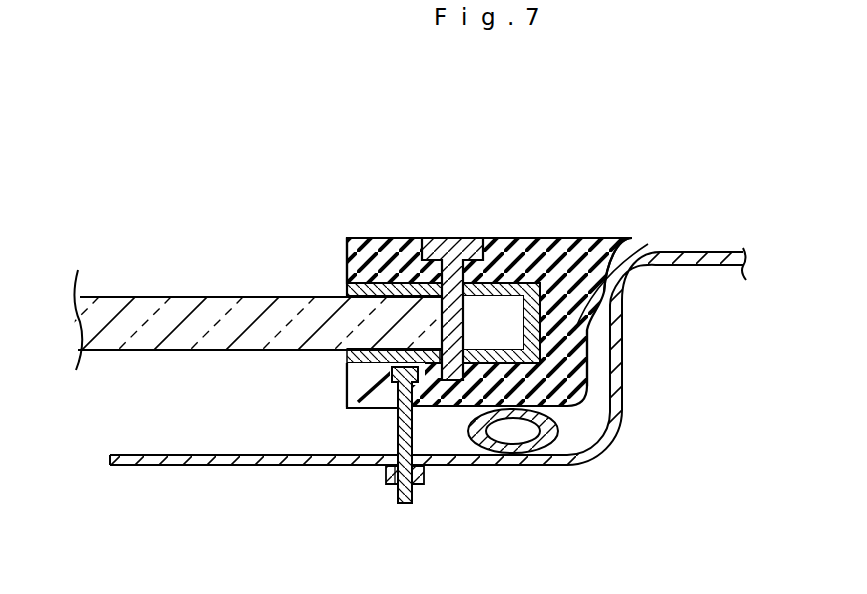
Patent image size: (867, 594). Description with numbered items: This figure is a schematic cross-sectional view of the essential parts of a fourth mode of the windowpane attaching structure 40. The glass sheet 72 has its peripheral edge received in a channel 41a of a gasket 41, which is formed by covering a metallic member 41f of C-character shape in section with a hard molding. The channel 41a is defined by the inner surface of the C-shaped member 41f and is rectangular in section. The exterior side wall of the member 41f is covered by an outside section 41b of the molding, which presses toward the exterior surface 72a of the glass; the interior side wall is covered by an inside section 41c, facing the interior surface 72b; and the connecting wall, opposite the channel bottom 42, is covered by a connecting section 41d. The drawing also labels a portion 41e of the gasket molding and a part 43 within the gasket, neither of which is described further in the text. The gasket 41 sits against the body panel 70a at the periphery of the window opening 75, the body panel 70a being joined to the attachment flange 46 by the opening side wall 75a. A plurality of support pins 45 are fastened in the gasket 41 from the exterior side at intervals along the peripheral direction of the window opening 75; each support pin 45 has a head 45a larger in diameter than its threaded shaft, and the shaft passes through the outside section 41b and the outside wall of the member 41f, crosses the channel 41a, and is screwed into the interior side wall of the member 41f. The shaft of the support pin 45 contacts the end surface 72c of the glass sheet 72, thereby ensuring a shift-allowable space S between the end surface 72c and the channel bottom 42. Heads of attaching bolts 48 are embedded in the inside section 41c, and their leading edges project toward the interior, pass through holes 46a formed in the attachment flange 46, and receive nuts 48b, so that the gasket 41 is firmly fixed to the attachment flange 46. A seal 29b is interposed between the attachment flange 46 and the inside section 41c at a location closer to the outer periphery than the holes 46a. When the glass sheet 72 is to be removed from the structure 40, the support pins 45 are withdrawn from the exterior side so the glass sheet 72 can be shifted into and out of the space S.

The windowpane attaching structure 40 is at (238, 163).
The gasket 41 is at (372, 276).
The channel 41a is at (332, 296).
The outside section 41b is at (385, 237).
The inside section 41c is at (352, 397).
The connecting section 41d is at (592, 333).
The housing shoulder 41e is at (626, 237).
The metallic member 41f is at (360, 237).
The channel bottom 42 is at (538, 268).
The T-bolt 43 is at (440, 237).
The support pin 45 is at (502, 237).
The head 45a is at (457, 237).
The attachment flange 46 is at (262, 468).
The hole 46a is at (410, 488).
The attaching bolt 48 is at (396, 419).
The nut 48b is at (385, 486).
The glass sheet 72 is at (156, 273).
The exterior surface 72a is at (232, 297).
The interior surface 72b is at (181, 352).
The end surface 72c is at (348, 364).
The body panel 70a is at (710, 252).
The window opening 75 is at (583, 423).
The opening side wall 75a is at (625, 395).
The seal 29b is at (562, 465).
The shift-allowable space S is at (497, 330).